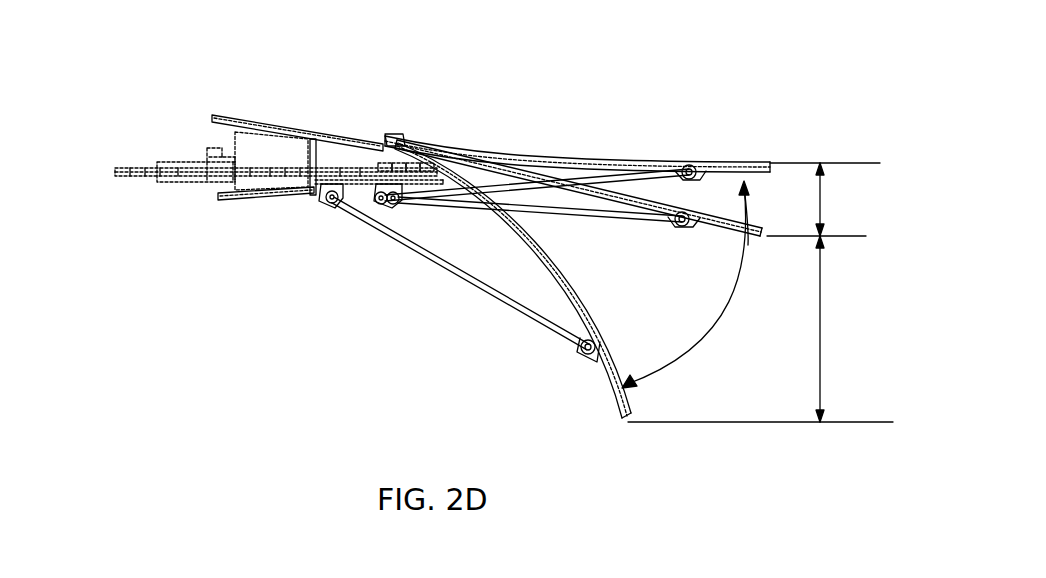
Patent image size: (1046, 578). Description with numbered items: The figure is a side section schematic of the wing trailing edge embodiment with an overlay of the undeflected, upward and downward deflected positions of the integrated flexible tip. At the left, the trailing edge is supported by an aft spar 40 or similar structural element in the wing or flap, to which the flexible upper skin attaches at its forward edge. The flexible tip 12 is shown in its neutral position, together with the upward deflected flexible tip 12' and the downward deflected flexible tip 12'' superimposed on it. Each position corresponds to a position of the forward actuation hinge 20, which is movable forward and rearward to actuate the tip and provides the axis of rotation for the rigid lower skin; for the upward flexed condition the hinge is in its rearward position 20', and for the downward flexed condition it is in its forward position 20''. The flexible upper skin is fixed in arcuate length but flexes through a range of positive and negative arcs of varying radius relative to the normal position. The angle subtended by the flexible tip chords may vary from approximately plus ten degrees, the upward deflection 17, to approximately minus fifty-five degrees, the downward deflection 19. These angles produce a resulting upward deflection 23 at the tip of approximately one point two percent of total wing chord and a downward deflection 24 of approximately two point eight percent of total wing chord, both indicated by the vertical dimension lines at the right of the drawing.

The aft spar 40 is at (300, 131).
The flexible tip 12 is at (578, 208).
The upward deflected flexible tip 12' is at (577, 137).
The downward deflected flexible tip 12'' is at (513, 280).
The forward actuation hinge 20 is at (507, 228).
The actuation hinge in rearward position 20' is at (522, 260).
The actuation hinge in forward position 20'' is at (431, 267).
The upward deflection 17 is at (747, 207).
The downward deflection 19 is at (698, 340).
The upward deflection at the tip 23 is at (823, 212).
The downward deflection at the tip 24 is at (823, 352).